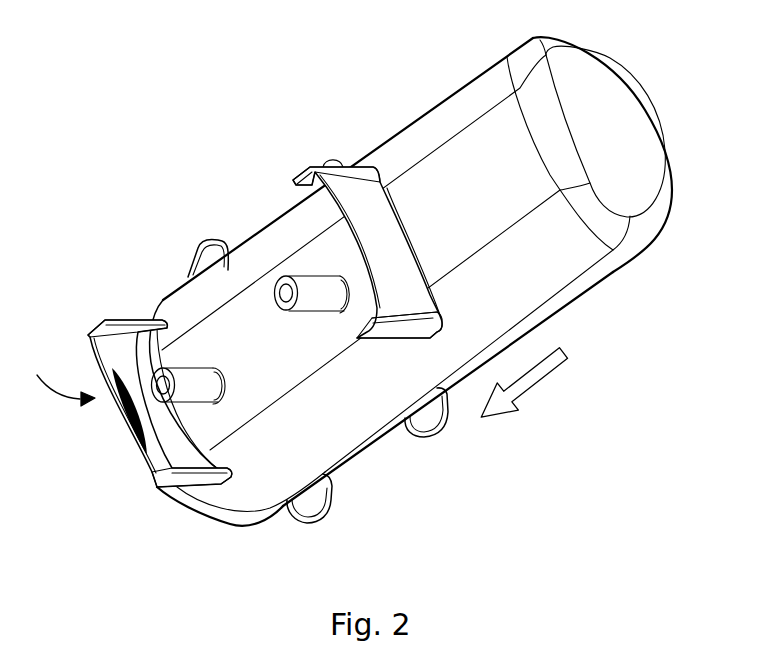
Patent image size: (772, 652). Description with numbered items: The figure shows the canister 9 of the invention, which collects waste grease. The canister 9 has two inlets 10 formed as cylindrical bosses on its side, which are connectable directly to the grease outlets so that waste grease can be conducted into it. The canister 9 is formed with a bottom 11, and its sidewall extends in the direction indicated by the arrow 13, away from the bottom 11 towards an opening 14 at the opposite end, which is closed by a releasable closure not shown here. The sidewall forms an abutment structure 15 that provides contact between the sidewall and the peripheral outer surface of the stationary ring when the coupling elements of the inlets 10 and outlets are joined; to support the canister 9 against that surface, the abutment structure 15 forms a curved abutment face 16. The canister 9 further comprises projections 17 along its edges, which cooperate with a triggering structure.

The canister 9 is at (413, 277).
The inlets 10 is at (310, 305).
The bottom 11 is at (595, 95).
The arrow 13 is at (527, 383).
The opening 14 is at (57, 378).
The abutment structure 15 is at (350, 183).
The curved abutment face 16 is at (368, 265).
The projections 17 is at (210, 253).